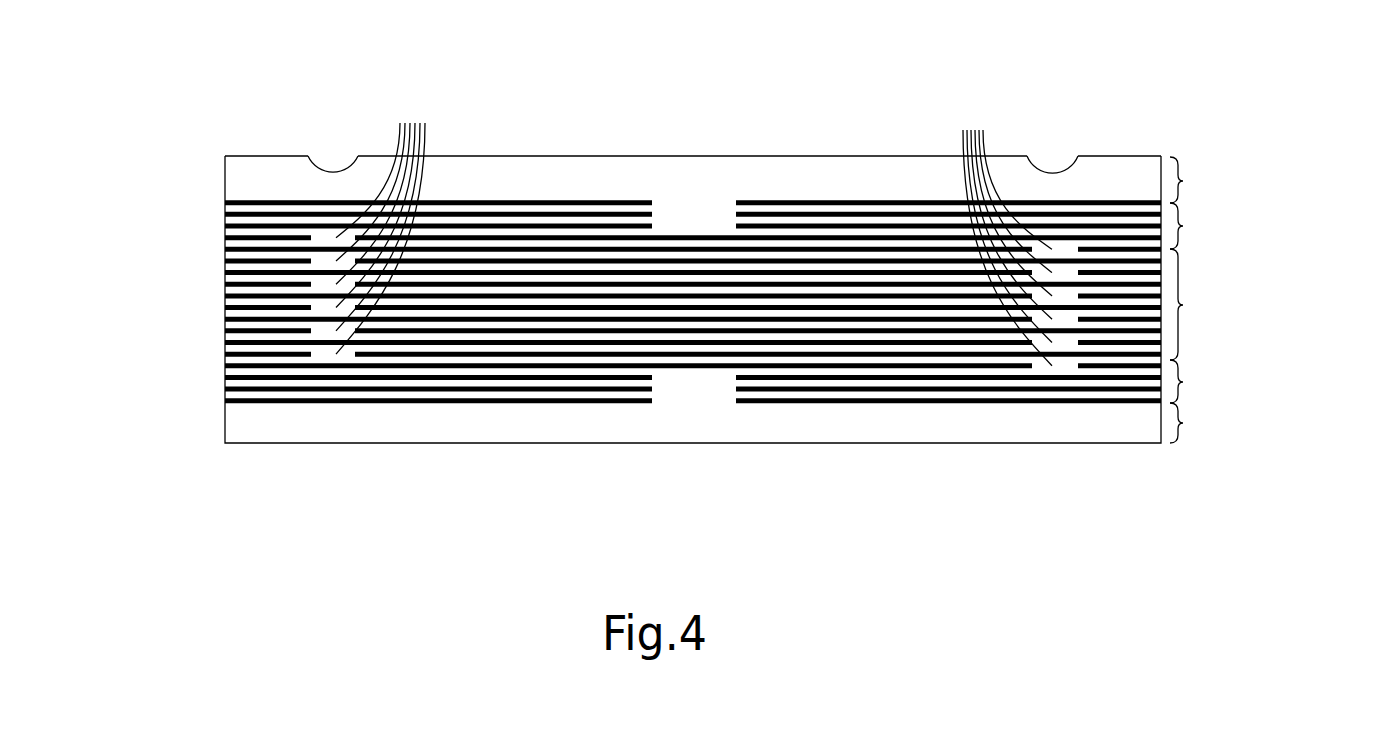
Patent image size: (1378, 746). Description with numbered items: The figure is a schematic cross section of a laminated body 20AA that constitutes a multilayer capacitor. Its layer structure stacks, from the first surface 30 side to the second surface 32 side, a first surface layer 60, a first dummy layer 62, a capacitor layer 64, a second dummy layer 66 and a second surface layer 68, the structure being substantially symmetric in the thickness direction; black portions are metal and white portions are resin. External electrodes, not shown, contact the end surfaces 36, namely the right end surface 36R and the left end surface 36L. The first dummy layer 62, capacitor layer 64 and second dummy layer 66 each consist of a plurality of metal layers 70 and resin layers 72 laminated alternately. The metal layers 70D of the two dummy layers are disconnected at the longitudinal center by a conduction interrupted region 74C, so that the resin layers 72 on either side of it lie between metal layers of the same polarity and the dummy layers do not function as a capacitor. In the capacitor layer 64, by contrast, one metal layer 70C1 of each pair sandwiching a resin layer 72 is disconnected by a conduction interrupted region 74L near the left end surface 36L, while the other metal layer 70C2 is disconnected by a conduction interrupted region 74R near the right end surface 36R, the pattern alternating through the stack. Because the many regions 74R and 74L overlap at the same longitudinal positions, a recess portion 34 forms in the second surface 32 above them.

The laminated body 20AA is at (1268, 32).
The first surface 30 is at (450, 452).
The second surface 32 is at (484, 150).
The recess portion 34 is at (337, 162).
The end surface 36 is at (707, 238).
The left end surface 36L is at (219, 174).
The right end surface 36R is at (1172, 327).
The first surface layer 60 is at (1192, 423).
The first dummy layer 62 is at (1192, 381).
The capacitor layer 64 is at (1192, 304).
The second dummy layer 66 is at (1192, 226).
The second surface layer 68 is at (1192, 180).
The metal layer 70 is at (605, 286).
The metal layer of dummy layer 70D is at (225, 202).
The metal layer of capacitor layer 70C1 is at (225, 237).
The metal layer of capacitor layer 70C2 is at (225, 250).
The resin layer 72 is at (225, 243).
The conduction interrupted region 74L is at (384, 227).
The conduction interrupted region 74R is at (1002, 233).
The conduction interrupted region 74C is at (703, 215).